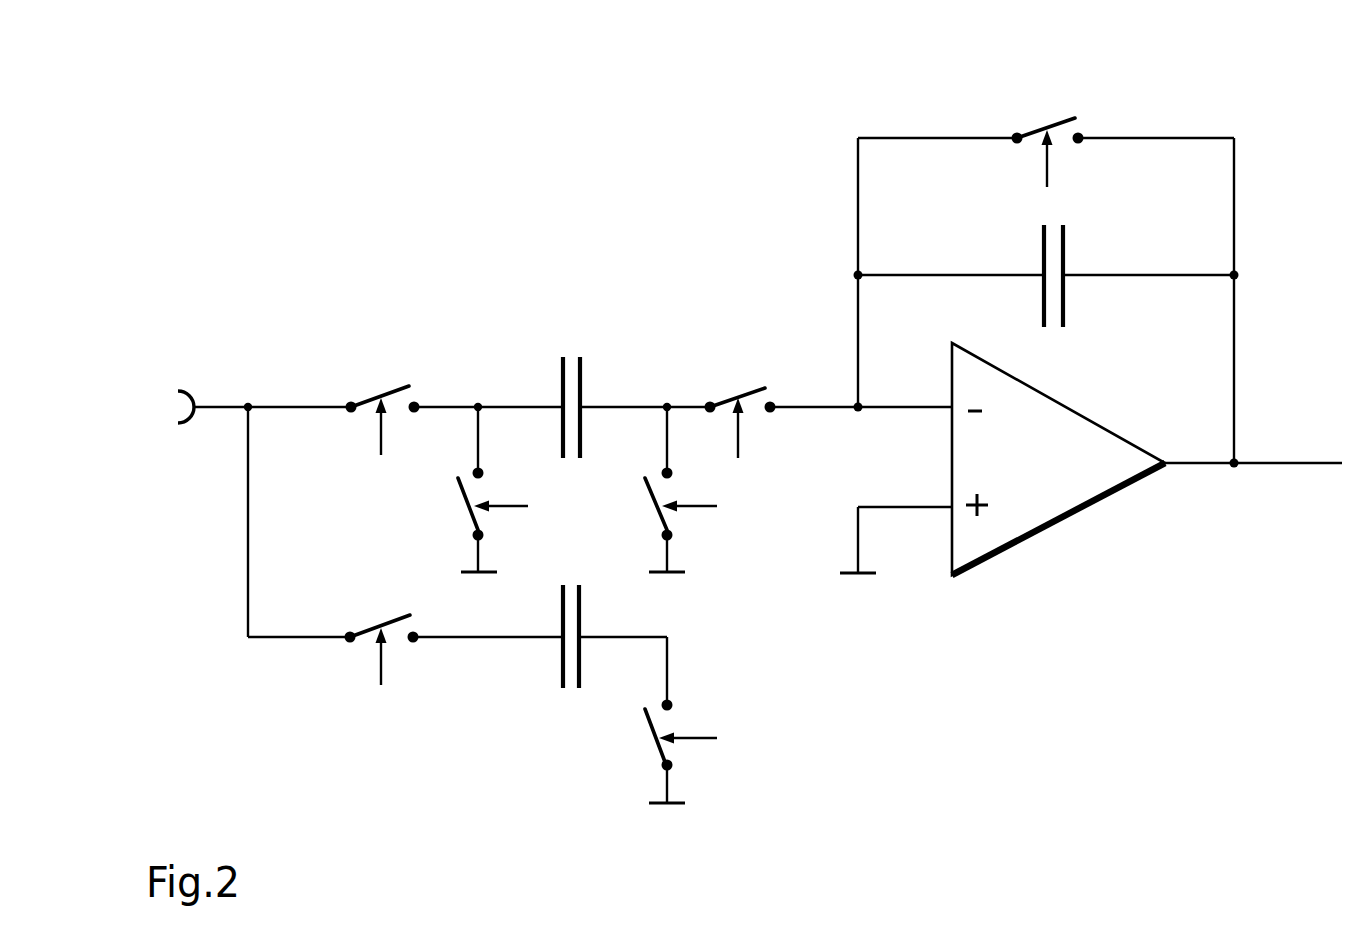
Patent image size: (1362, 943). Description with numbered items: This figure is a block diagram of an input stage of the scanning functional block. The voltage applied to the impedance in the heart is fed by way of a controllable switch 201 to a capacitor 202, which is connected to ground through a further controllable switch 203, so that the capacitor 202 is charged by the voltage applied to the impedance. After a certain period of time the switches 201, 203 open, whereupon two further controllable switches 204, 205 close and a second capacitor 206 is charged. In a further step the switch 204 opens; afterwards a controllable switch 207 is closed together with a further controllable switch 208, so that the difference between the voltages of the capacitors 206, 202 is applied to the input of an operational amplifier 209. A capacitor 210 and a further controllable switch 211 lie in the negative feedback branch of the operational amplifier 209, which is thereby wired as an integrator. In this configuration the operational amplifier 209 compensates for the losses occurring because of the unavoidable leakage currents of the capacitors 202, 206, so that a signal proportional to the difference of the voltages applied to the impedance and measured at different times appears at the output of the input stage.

The controllable switch 201 is at (409, 386).
The capacitor 202 is at (563, 385).
The controllable switch 203 is at (645, 495).
The controllable switch 204 is at (370, 632).
The controllable switch 205 is at (653, 722).
The capacitor 206 is at (563, 666).
The controllable switch 207 is at (458, 492).
The controllable switch 208 is at (752, 387).
The operational amplifier 209 is at (1033, 540).
The capacitor 210 is at (1065, 252).
The controllable switch 211 is at (1060, 121).